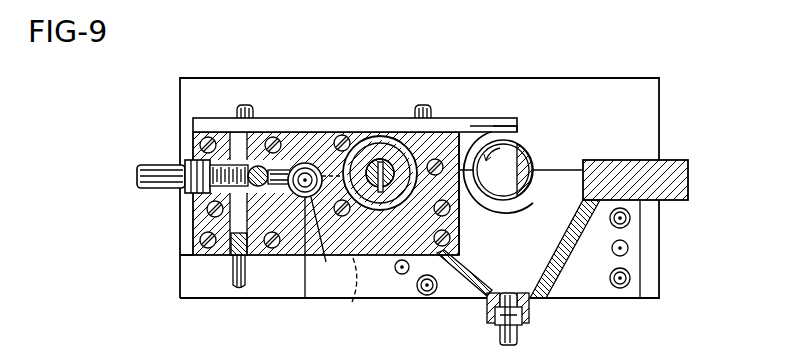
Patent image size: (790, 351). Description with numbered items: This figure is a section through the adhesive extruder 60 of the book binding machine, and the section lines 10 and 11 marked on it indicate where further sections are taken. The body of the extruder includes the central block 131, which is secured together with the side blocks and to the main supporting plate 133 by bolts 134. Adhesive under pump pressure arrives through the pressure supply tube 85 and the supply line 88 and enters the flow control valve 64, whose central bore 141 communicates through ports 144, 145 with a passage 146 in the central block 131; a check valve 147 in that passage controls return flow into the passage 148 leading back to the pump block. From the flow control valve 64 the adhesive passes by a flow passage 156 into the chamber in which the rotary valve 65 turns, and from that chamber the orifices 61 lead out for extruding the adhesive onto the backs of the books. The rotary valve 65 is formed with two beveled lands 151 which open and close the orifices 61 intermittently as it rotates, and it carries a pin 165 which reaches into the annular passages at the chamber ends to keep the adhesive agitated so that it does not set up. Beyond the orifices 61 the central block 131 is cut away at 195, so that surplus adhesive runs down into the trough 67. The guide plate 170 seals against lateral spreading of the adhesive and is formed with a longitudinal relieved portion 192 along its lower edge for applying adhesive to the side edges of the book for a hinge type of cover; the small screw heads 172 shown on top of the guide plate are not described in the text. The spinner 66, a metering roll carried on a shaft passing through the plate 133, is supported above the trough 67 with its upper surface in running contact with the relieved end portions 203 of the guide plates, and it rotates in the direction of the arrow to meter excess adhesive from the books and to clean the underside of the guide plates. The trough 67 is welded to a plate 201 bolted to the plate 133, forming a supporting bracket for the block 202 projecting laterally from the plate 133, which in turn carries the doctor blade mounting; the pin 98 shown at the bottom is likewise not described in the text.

The section line 10- 10 is at (383, 103).
The section line 11- 11 is at (130, 175).
The extruder 60 is at (122, 102).
The orifices 61 is at (380, 137).
The flow control valve 64 is at (303, 265).
The rotary valve 65 is at (521, 185).
The spinner 66 is at (518, 148).
The trough 67 is at (553, 277).
The pressure supply tube 85 is at (150, 166).
The supply line 88 is at (227, 280).
The pin 98 is at (520, 338).
The central block 131 is at (195, 251).
The main supporting plate 133 is at (611, 80).
The bolts 134 is at (276, 138).
The central bore 141 is at (331, 239).
The port 144 is at (300, 197).
The port 145 is at (306, 135).
The passage 146 is at (262, 168).
The check valve 147 is at (238, 163).
The passage 148 is at (230, 224).
The lands 151 is at (386, 138).
The flow passage 156 is at (359, 292).
The pin 165 is at (448, 258).
The guide plate 170 is at (266, 118).
The screw head 172 is at (243, 106).
The longitudinal relieved portions 192 is at (483, 127).
The cut-away portion 195 is at (444, 134).
The plate 201 is at (603, 287).
The block 202 is at (690, 180).
The relieved end portions 203 is at (508, 126).